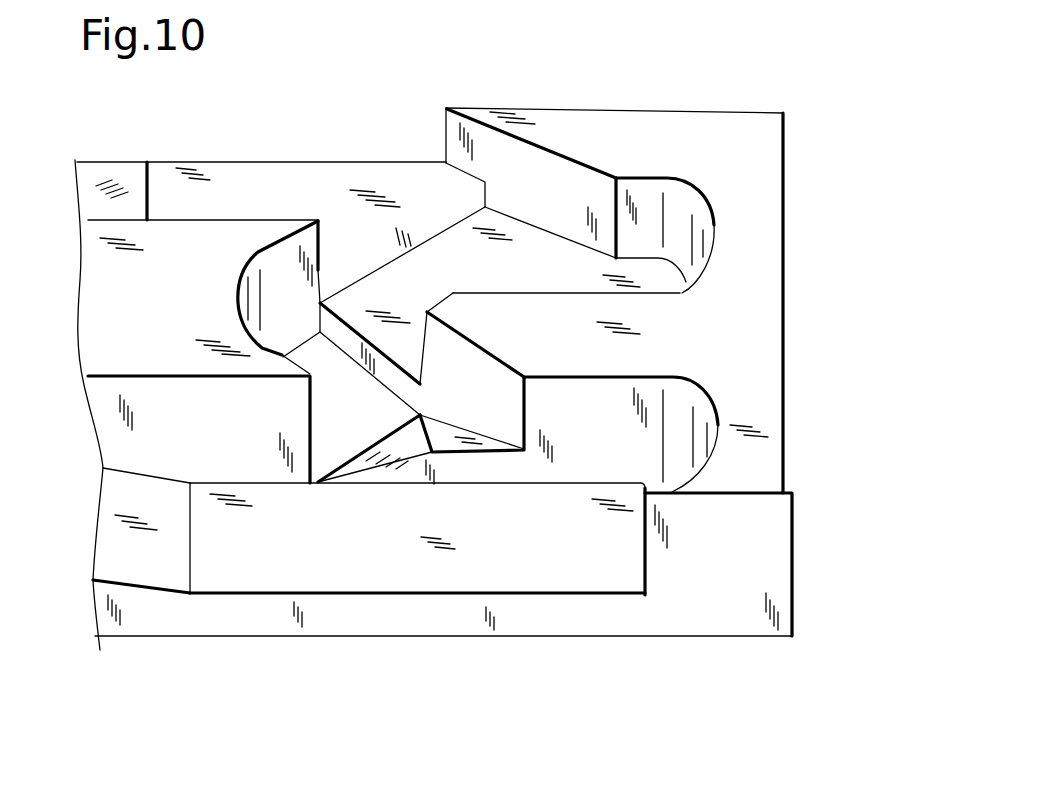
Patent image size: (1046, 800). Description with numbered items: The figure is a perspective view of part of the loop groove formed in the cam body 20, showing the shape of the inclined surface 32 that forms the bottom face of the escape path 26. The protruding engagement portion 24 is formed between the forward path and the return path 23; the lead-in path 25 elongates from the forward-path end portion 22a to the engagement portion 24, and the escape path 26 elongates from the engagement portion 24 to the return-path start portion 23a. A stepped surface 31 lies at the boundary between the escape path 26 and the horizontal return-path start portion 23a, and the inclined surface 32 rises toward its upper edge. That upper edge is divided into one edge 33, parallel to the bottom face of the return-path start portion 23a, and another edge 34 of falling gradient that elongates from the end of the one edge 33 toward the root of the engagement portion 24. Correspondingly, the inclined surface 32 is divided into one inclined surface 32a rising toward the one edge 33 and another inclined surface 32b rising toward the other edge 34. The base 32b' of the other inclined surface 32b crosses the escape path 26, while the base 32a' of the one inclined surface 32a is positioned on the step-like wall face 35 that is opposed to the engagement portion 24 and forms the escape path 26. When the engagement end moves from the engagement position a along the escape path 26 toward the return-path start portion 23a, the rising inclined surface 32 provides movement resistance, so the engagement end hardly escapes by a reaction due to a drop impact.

The cam body 20 is at (260, 625).
The forward-path end portion 22a is at (672, 281).
The return path 23 is at (148, 573).
The return-path start portion 23a is at (610, 572).
The protruding engagement portion 24 is at (218, 228).
The lead-in path 25 is at (478, 263).
The escape path 26 is at (333, 447).
The stepped surface 31 is at (448, 440).
The inclined surface 32 is at (528, 723).
The one inclined surface 32a is at (479, 585).
The other inclined surface 32b is at (377, 570).
The base of the one inclined surface 32a' is at (472, 398).
The base of the other inclined surface 32b' is at (351, 375).
The one edge 33 is at (477, 468).
The other edge 34 is at (380, 468).
The step-like wall face 35 is at (525, 418).
The engagement position a is at (307, 347).